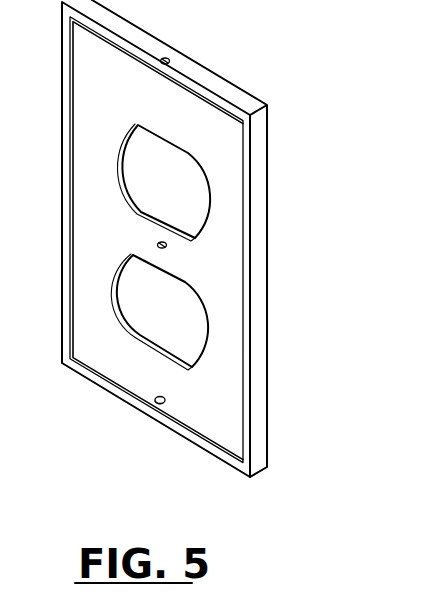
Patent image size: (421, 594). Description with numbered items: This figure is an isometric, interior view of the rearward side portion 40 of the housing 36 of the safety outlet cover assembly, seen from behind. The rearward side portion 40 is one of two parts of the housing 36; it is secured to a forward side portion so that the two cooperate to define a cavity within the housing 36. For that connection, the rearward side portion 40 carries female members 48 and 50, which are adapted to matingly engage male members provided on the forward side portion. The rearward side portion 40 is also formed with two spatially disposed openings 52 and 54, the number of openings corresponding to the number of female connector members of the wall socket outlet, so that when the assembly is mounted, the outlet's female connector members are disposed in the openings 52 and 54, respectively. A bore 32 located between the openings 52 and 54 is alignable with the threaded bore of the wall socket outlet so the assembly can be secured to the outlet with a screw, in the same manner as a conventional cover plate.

The housing 36 is at (282, 70).
The rearward side portion 40 is at (272, 236).
The female member 48 is at (168, 57).
The bore 32 is at (167, 248).
The female member 50 is at (154, 399).
The opening 52 is at (201, 192).
The opening 54 is at (200, 318).